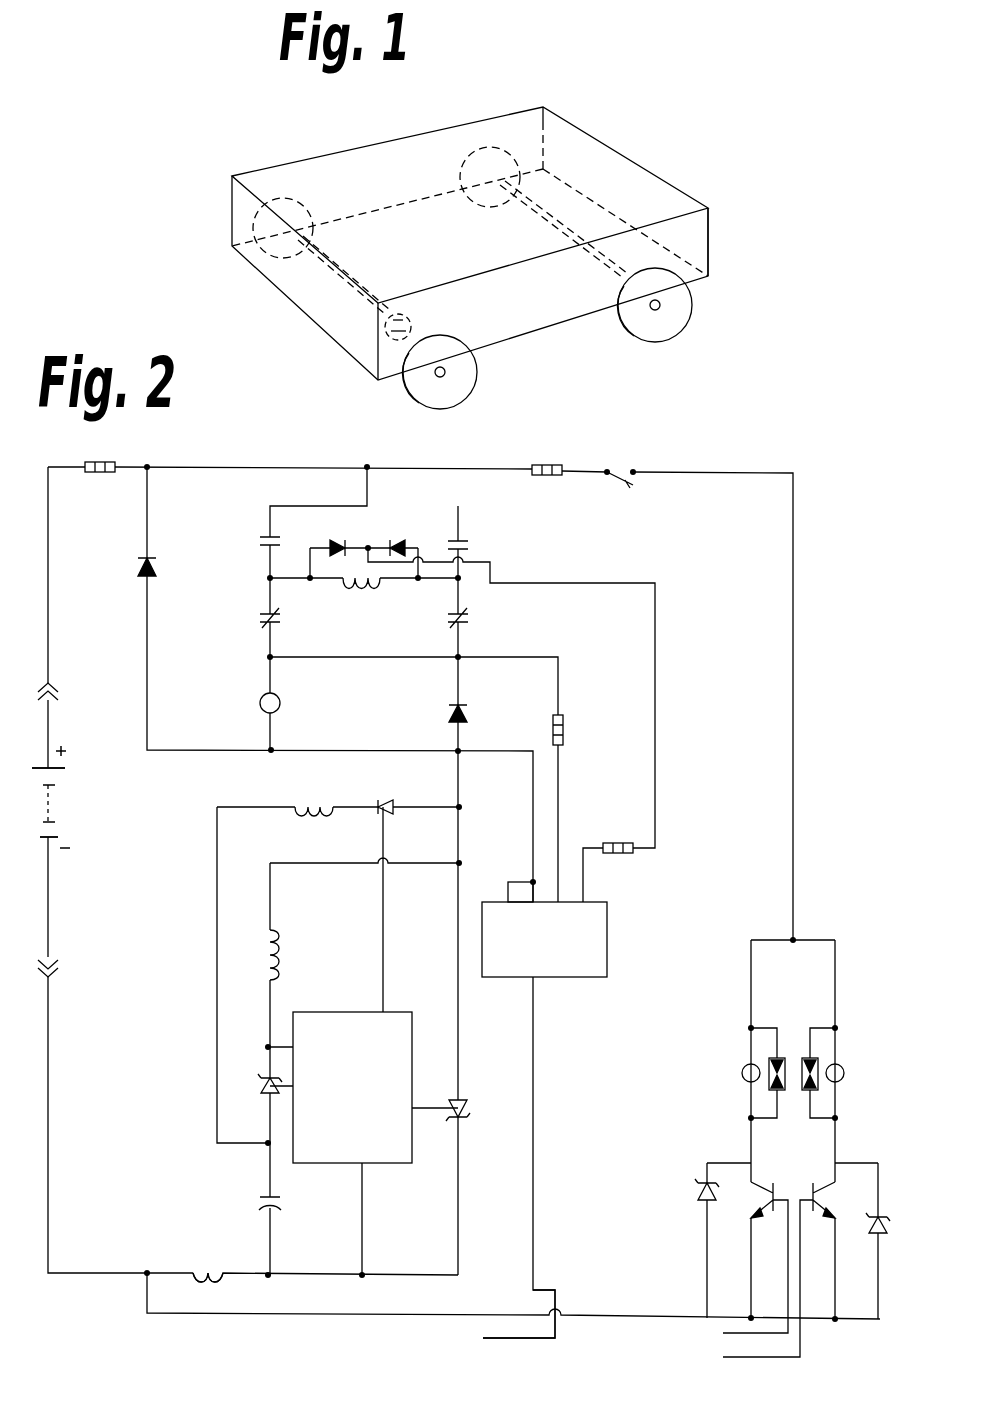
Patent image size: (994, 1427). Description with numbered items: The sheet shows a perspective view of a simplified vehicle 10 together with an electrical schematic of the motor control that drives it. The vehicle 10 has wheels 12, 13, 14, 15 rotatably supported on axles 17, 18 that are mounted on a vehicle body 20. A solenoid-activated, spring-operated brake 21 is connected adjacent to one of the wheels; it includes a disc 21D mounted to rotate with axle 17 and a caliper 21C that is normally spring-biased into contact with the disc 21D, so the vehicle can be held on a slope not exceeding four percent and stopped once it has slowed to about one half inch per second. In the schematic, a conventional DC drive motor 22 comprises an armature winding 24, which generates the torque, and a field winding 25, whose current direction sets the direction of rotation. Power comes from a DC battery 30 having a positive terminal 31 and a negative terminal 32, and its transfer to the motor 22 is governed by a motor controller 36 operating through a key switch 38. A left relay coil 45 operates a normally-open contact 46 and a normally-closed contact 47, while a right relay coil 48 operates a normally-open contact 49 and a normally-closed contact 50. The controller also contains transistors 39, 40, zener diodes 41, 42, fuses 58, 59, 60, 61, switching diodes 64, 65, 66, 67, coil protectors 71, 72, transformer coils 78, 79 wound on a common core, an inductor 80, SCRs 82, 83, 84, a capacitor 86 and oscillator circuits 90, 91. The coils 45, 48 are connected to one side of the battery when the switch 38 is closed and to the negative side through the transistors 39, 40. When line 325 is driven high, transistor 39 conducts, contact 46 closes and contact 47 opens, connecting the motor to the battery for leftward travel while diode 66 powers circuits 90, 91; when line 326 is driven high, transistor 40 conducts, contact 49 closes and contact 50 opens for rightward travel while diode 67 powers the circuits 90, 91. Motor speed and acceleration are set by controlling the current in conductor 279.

In FIG. 1, the vehicle 10 is at (422, 132).
In FIG. 1, the wheel 12 is at (415, 393).
In FIG. 1, the wheel 13 is at (637, 318).
In FIG. 1, the wheel 14 is at (487, 148).
In FIG. 1, the wheel 15 is at (285, 200).
In FIG. 1, the axle 17 is at (331, 281).
In FIG. 1, the axle 18 is at (579, 229).
In FIG. 1, the vehicle body 20 is at (684, 204).
In FIG. 1, the solenoid-activated, spring-operated brake 21 is at (408, 297).
In FIG. 1, the caliper 21C is at (413, 309).
In FIG. 1, the disc 21D is at (417, 327).
In FIG. 2, the DC drive motor 22 is at (237, 681).
In FIG. 2, the armature winding 24 is at (280, 701).
In FIG. 2, the field winding 25 is at (345, 596).
In FIG. 2, the DC battery 30 is at (67, 815).
In FIG. 2, the positive terminal 31 is at (43, 764).
In FIG. 2, the negative terminal 32 is at (47, 840).
In FIG. 2, the motor controller 36 is at (703, 462).
In FIG. 2, the key switch 38 is at (620, 488).
In FIG. 2, the transistor 39 is at (778, 1189).
In FIG. 2, the transistor 40 is at (813, 1183).
In FIG. 2, the zener diode 41 is at (697, 1180).
In FIG. 2, the zener diode 42 is at (887, 1213).
In FIG. 2, the left relay coil 45 is at (743, 1087).
In FIG. 2, the normally-open contact 46 is at (278, 540).
In FIG. 2, the normally-closed contact 47 is at (263, 617).
In FIG. 2, the right relay coil 48 is at (843, 1077).
In FIG. 2, the normally-open contact 49 is at (472, 545).
In FIG. 2, the normally-closed contact 50 is at (467, 613).
In FIG. 2, the fuse 58 is at (103, 460).
In FIG. 2, the fuse 59 is at (547, 464).
In FIG. 2, the fuse 60 is at (565, 728).
In FIG. 2, the fuse 61 is at (618, 841).
In FIG. 2, the switching diode 64 is at (153, 570).
In FIG. 2, the switching diode 65 is at (450, 713).
In FIG. 2, the switching diode 66 is at (337, 541).
In FIG. 2, the switching diode 67 is at (396, 541).
In FIG. 2, the coil protector 71 is at (780, 1058).
In FIG. 2, the coil protector 72 is at (797, 1097).
In FIG. 2, the transformer coil 78 is at (208, 1273).
In FIG. 2, the transformer coil 79 is at (282, 967).
In FIG. 2, the inductor 80 is at (302, 822).
In FIG. 2, the SCR 82 is at (463, 1100).
In FIG. 2, the SCR 83 is at (262, 1083).
In FIG. 2, the SCR 84 is at (385, 800).
In FIG. 2, the capacitor 86 is at (263, 1194).
In FIG. 2, the oscillator circuit 90 is at (392, 1012).
In FIG. 2, the oscillator circuit 91 is at (608, 907).
In FIG. 2, the conductor 279 is at (485, 1338).
In FIG. 2, the line 325 is at (723, 1333).
In FIG. 2, the line 326 is at (740, 1358).